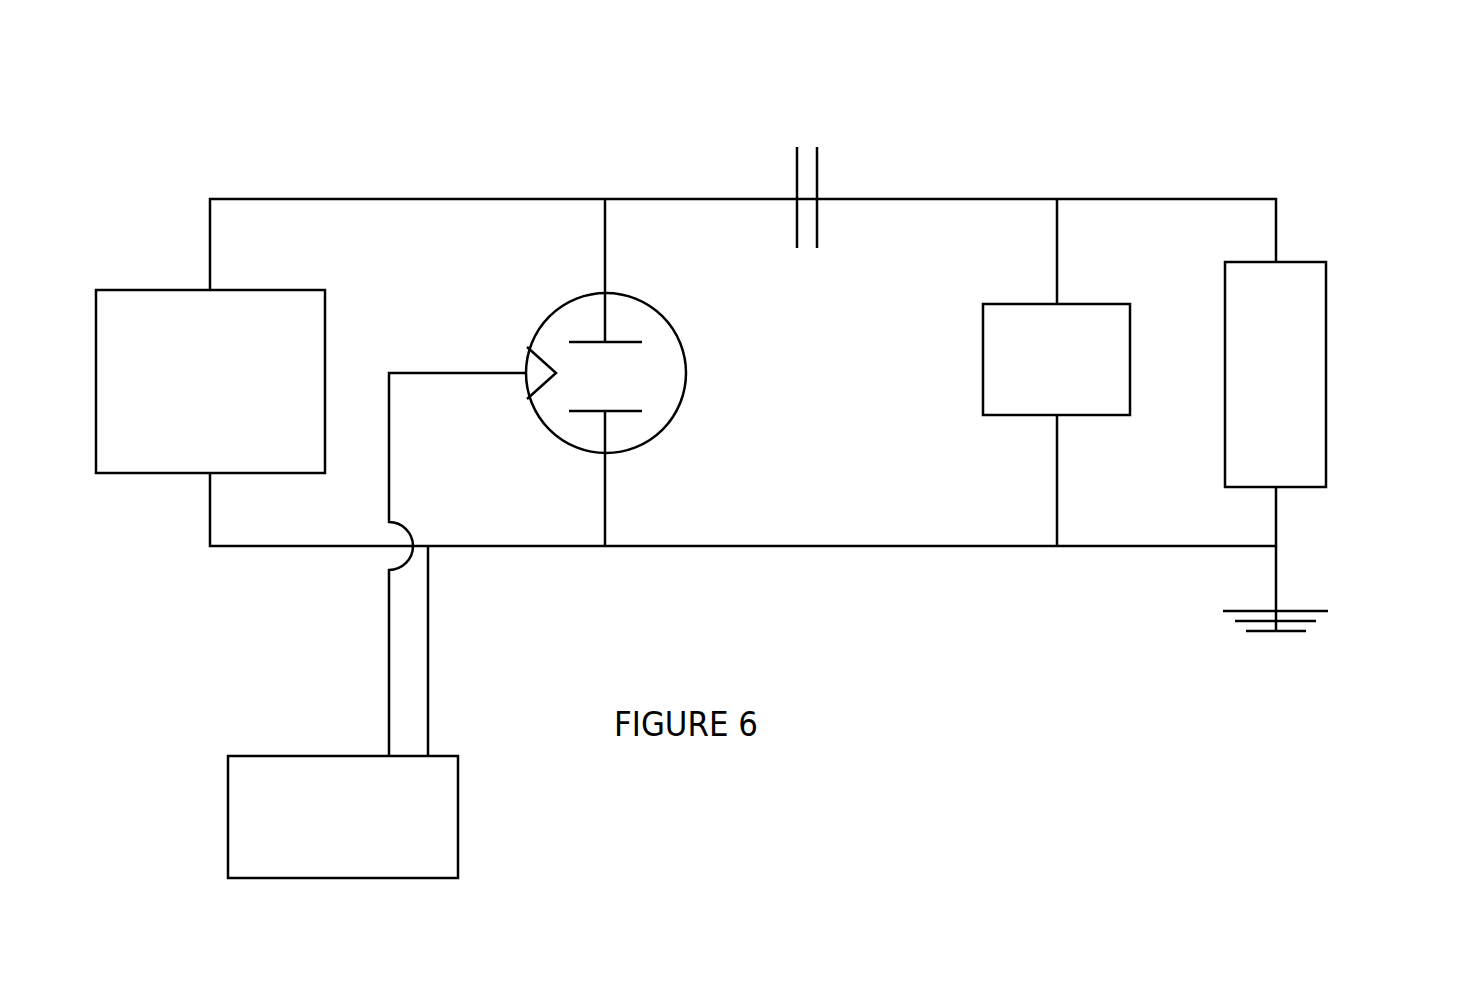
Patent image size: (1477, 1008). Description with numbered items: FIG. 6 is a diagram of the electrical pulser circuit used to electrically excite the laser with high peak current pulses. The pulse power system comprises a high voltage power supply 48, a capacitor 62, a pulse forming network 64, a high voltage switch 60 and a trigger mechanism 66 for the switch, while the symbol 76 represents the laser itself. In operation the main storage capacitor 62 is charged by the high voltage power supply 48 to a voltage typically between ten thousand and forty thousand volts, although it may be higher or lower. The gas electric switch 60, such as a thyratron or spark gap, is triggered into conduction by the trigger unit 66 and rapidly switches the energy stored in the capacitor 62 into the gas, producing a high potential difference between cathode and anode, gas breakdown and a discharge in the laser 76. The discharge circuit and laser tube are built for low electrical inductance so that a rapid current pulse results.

The high voltage power supply 48 is at (325, 312).
The high voltage switch 60 is at (563, 403).
The capacitor 62 is at (770, 148).
The pulse forming network 64 is at (1042, 323).
The trigger mechanism 66 is at (327, 750).
The laser 76 is at (1327, 373).